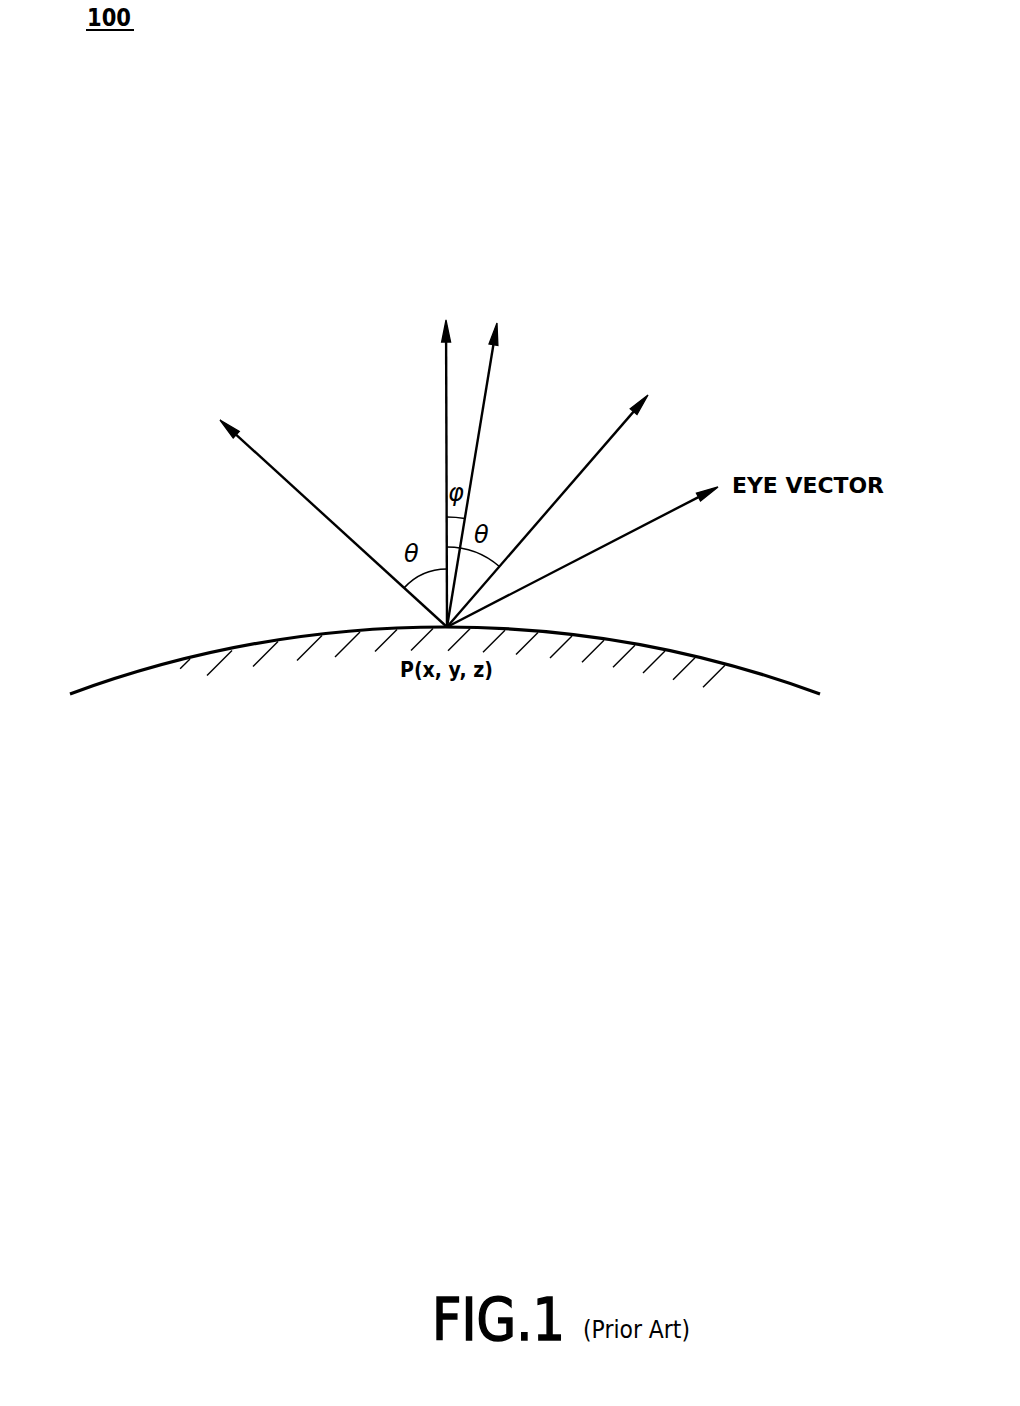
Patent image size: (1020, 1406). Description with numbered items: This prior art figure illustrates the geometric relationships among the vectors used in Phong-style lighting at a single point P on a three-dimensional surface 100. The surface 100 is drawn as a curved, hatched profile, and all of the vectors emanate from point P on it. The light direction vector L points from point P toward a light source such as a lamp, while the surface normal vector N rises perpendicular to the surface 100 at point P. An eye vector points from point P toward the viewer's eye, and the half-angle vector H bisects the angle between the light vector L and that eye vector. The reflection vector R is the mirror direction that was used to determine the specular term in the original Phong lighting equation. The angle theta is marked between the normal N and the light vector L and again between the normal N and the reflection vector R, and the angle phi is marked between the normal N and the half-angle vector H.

The 3D surface 100 is at (445, 675).
The light direction vector L is at (187, 375).
The surface normal vector N is at (427, 285).
The half-angle vector H is at (483, 285).
The reflection vector R is at (641, 377).